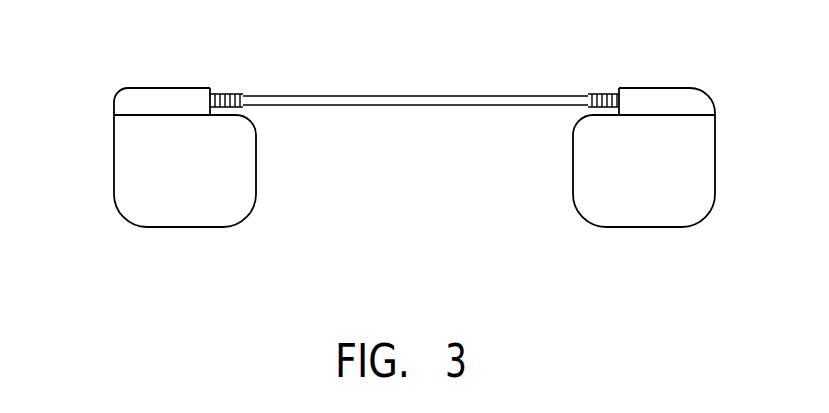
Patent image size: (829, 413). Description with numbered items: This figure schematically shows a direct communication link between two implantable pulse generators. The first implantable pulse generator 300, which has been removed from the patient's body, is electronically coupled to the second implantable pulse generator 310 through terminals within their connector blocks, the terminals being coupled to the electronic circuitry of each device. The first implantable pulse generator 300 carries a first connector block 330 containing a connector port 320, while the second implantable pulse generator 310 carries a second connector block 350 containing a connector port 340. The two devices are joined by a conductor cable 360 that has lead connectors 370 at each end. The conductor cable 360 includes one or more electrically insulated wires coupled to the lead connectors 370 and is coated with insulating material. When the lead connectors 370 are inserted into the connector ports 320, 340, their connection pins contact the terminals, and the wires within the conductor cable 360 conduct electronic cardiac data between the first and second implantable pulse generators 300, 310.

The first implantable pulse generator 300 is at (137, 166).
The second implantable pulse generator 310 is at (682, 167).
The connector port 320 is at (213, 92).
The first connector block 330 is at (124, 96).
The connector port 340 is at (618, 92).
The second connector block 350 is at (703, 97).
The conductor cable 360 is at (413, 95).
The lead connectors 370 is at (233, 94).